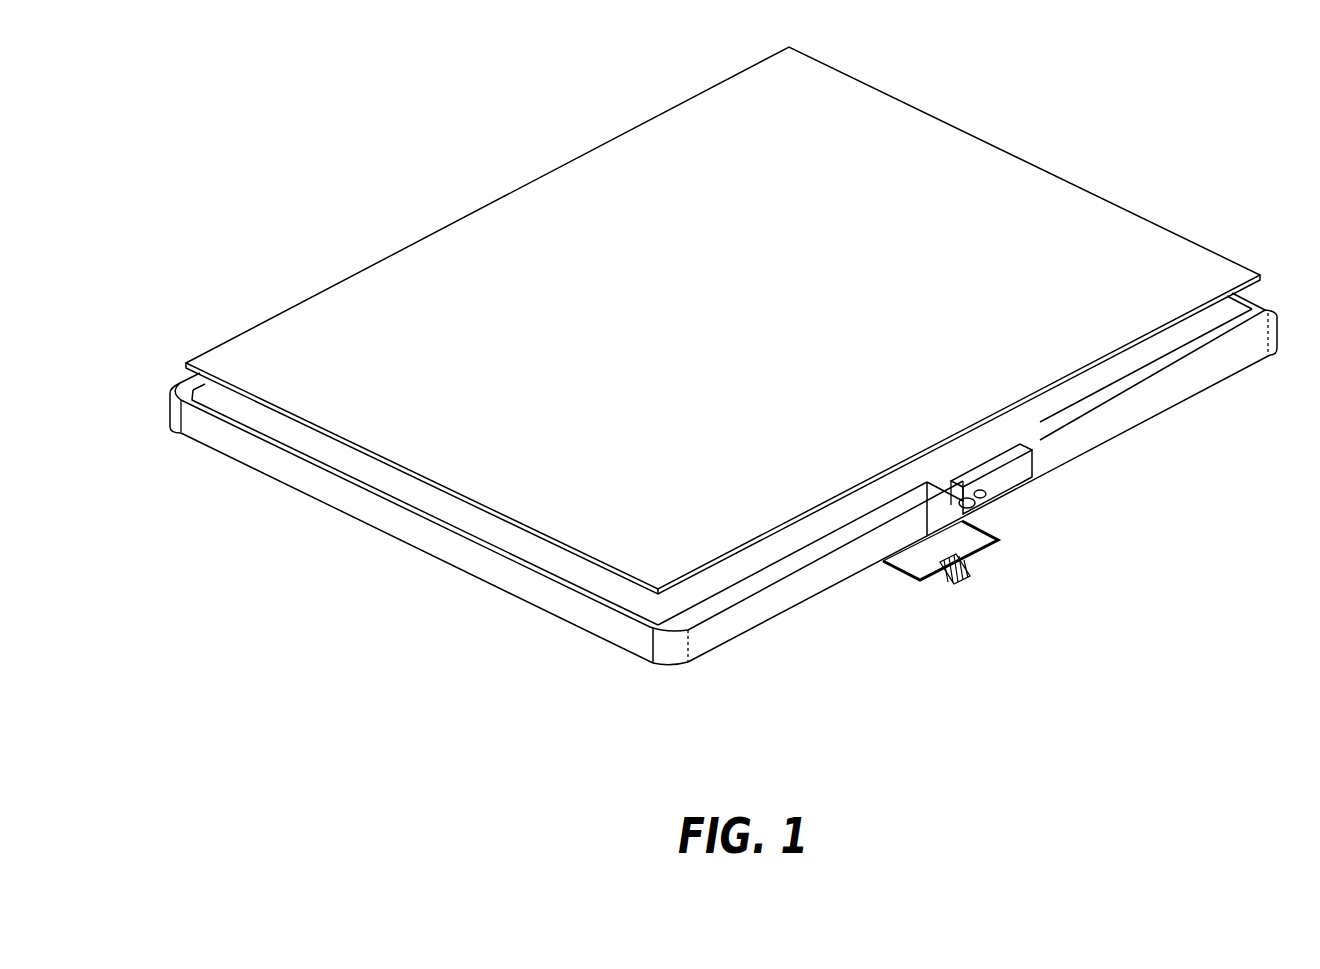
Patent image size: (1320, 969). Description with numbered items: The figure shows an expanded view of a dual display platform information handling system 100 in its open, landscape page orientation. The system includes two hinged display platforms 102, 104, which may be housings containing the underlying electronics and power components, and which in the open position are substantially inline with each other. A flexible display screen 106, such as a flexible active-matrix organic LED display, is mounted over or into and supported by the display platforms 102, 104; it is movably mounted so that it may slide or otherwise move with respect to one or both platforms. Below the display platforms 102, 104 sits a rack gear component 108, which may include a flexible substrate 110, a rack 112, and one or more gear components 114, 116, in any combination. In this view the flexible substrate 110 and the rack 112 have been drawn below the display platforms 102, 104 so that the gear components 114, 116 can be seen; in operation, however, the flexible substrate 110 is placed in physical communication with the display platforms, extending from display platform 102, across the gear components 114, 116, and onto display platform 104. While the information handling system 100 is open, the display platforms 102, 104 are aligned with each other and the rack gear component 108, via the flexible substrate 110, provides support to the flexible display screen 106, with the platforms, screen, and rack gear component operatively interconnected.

The dual display platform information handling system 100 is at (270, 170).
The display platform 102 is at (547, 553).
The display platform 104 is at (1135, 355).
The flexible display screen 106 is at (988, 165).
The rack gear component 108 is at (1055, 624).
The flexible substrate 110 is at (972, 540).
The rack 112 is at (966, 580).
The gear component 114 is at (982, 508).
The gear component 116 is at (1033, 470).